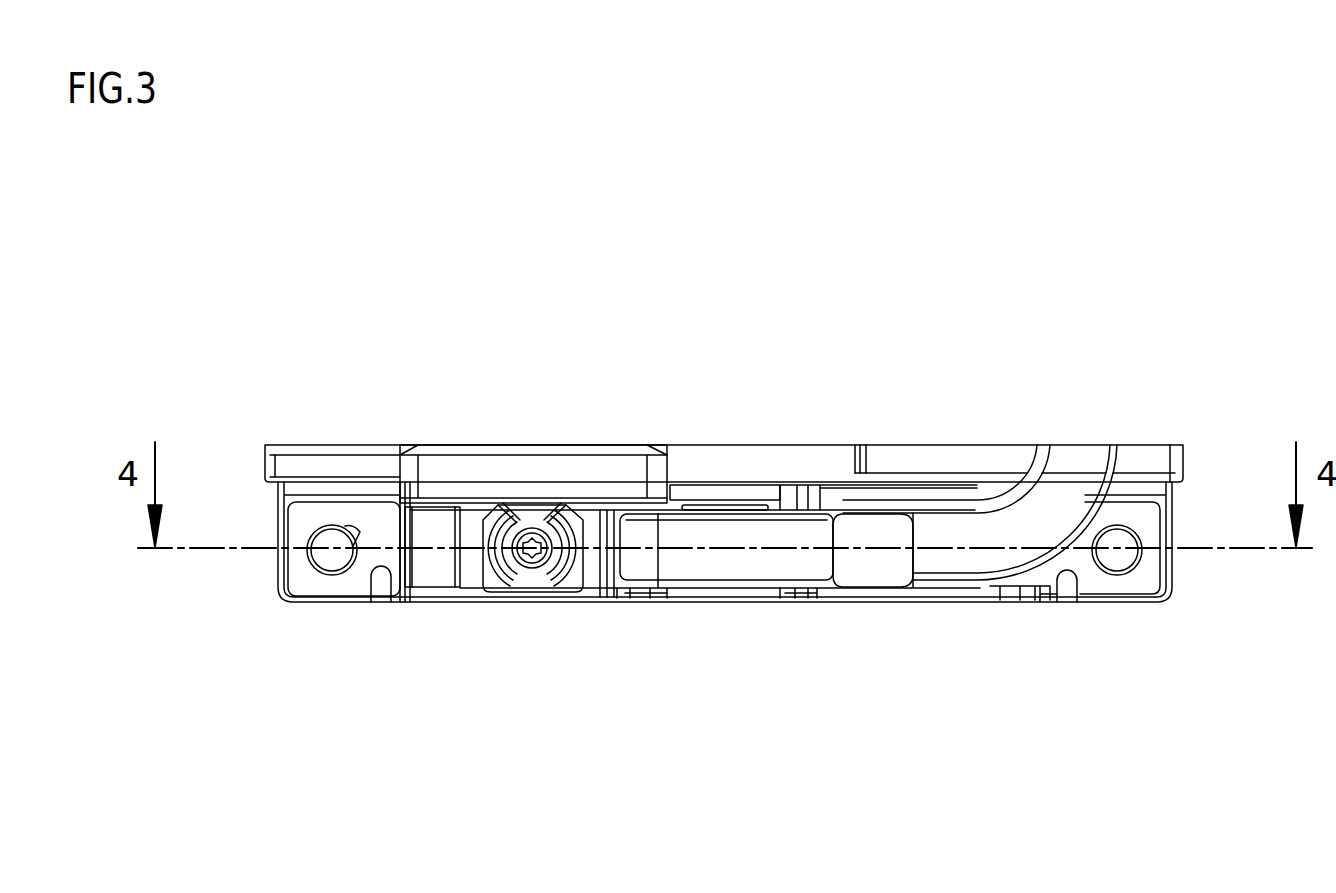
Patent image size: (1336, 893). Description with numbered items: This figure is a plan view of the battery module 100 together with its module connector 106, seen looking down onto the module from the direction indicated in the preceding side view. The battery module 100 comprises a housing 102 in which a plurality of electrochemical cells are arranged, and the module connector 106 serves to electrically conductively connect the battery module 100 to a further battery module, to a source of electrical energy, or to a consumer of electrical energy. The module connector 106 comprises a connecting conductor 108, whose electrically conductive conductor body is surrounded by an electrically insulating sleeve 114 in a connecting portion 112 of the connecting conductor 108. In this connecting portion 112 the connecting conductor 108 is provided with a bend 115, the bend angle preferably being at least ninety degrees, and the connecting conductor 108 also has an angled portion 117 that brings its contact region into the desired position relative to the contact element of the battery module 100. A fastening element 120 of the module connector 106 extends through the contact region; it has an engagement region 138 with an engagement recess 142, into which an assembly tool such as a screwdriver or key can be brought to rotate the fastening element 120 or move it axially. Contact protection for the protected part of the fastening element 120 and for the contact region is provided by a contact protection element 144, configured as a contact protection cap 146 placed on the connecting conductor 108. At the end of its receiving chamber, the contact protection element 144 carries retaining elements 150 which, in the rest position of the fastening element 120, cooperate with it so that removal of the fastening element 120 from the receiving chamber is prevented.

The battery module 100 is at (1177, 521).
The housing 102 is at (1150, 455).
The module connector 106 is at (875, 507).
The connecting conductor 108 is at (753, 562).
The connecting portion 112 is at (733, 523).
The electrically insulating sleeve 114 is at (955, 535).
The bend 115 is at (1075, 555).
The angled portion 117 is at (863, 534).
The fastening element 120 is at (532, 518).
The engagement region 138 is at (540, 557).
The engagement recess 142 is at (526, 558).
The contact protection element 144 is at (585, 558).
The contact protection cap 146 is at (515, 556).
The retaining element 150 is at (515, 505).